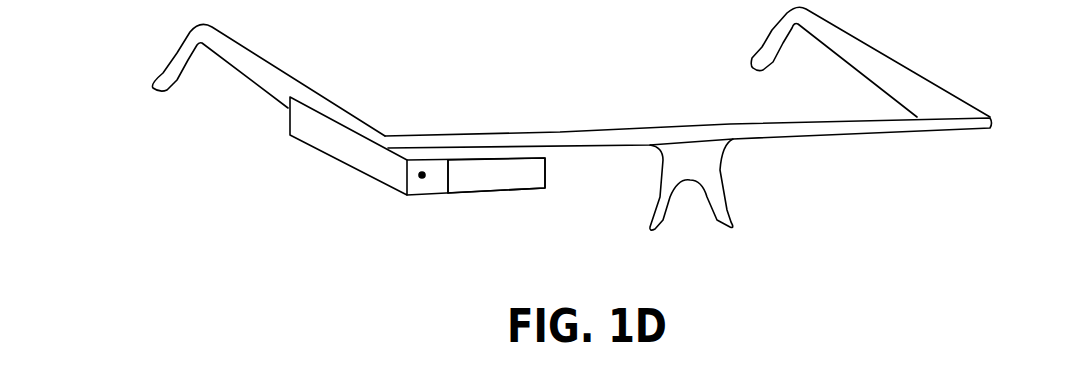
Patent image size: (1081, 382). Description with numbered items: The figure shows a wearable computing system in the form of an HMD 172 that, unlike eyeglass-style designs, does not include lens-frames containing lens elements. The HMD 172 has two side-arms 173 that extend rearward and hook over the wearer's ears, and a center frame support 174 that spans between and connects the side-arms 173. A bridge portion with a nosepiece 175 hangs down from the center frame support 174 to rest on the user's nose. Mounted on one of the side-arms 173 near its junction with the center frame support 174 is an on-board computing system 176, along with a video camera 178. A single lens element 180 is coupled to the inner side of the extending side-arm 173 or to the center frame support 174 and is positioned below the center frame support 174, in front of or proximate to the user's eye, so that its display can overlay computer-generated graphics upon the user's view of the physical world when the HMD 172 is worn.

The HMD 172 is at (978, 172).
The side-arms 173 is at (253, 68).
The center frame support 174 is at (588, 133).
The nosepiece 175 is at (712, 177).
The on-board computing system 176 is at (323, 155).
The video camera 178 is at (422, 175).
The single lens element 180 is at (498, 192).